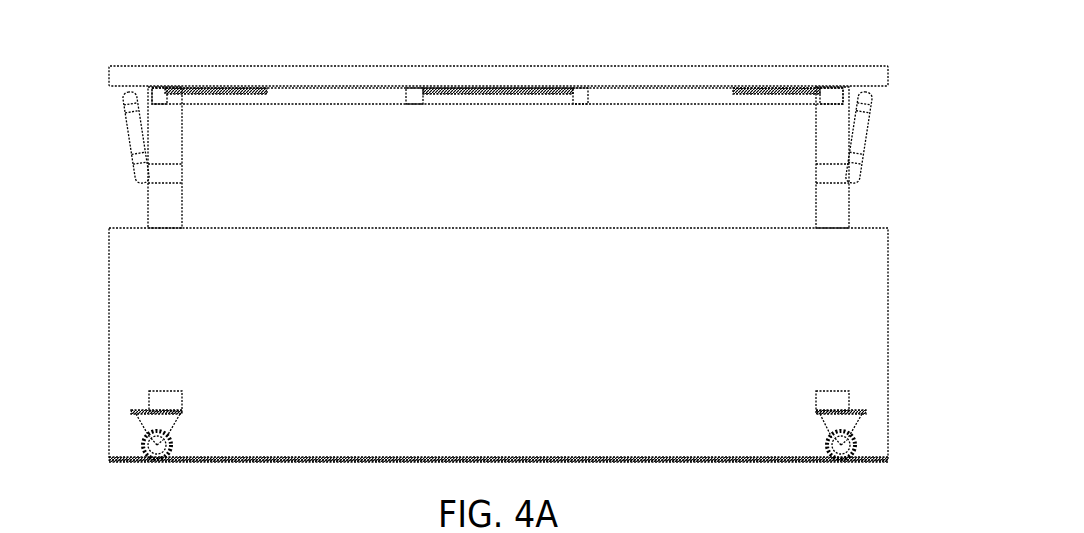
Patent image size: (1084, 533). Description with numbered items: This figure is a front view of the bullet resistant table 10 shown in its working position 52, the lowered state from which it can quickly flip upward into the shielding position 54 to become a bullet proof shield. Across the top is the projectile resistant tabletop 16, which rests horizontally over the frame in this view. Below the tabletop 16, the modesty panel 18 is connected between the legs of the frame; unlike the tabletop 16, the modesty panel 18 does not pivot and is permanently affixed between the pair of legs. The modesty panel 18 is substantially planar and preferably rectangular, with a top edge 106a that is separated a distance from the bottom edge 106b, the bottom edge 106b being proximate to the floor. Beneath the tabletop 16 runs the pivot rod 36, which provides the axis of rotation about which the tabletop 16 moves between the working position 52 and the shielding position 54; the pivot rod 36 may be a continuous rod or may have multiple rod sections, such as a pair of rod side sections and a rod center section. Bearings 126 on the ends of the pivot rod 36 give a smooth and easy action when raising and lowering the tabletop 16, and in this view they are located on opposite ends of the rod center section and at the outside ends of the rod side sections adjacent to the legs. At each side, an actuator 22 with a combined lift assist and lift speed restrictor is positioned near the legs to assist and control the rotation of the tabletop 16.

The table 10 is at (124, 25).
The projectile resistant tabletop 16 is at (776, 66).
The modesty panel 18 is at (870, 317).
The actuator 22 is at (866, 137).
The pivot rod 36 is at (776, 97).
The working position 52 is at (88, 63).
The shielding position 54 is at (495, 380).
The top edge 106a is at (128, 236).
The bottom edge 106b is at (333, 454).
The bearings 126 is at (161, 100).